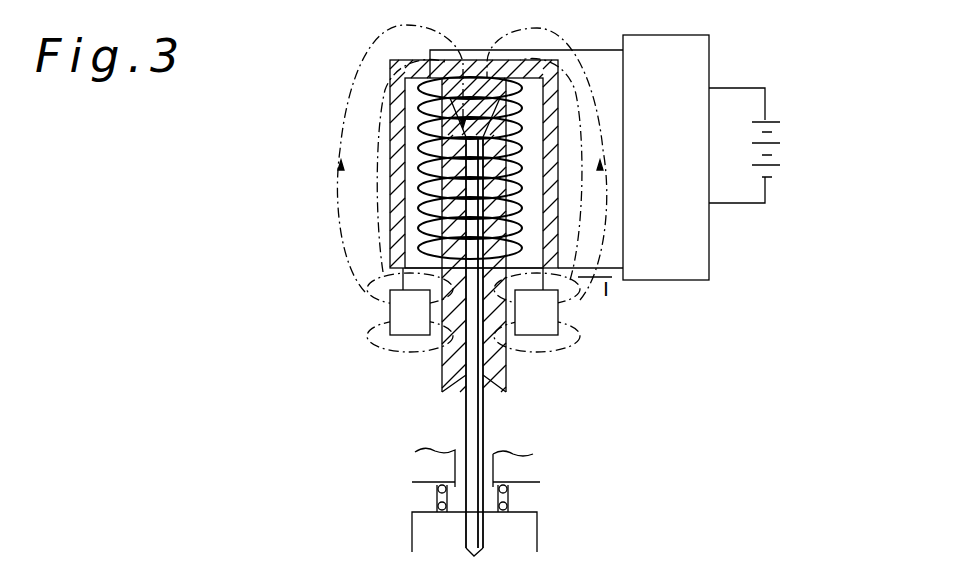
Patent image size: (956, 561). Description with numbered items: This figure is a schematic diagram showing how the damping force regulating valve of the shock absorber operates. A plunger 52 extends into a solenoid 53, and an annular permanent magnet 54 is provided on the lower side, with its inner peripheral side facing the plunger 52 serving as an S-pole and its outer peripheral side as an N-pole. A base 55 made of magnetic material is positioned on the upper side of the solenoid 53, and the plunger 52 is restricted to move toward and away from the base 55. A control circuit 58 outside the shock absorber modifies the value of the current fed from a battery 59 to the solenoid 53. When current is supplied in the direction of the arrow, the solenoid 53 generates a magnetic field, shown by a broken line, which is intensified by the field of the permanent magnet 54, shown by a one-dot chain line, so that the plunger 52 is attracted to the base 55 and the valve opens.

The plunger 52 is at (450, 200).
The solenoid 53 is at (427, 142).
The permanent magnet 54 is at (408, 336).
The base 55 is at (463, 135).
The control circuit 58 is at (660, 50).
The battery 59 is at (775, 145).